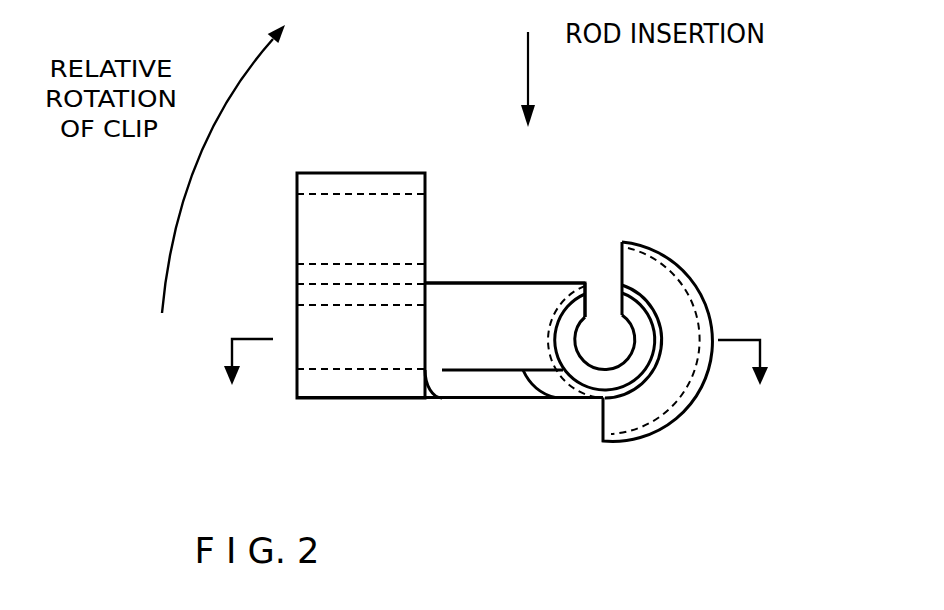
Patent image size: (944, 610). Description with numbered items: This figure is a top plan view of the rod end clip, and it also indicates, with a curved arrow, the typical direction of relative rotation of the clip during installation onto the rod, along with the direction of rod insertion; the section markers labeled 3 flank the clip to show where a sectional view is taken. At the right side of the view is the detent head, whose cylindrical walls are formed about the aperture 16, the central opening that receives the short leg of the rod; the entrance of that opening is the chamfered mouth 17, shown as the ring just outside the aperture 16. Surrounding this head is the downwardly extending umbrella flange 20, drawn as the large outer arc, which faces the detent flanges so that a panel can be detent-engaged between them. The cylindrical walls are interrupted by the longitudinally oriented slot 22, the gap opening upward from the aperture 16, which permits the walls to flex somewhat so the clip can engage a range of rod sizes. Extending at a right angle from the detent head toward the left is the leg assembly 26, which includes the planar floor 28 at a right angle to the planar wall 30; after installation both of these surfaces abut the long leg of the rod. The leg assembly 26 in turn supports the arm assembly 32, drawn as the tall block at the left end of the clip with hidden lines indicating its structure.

The section line 3- 3 is at (499, 362).
The aperture 16 is at (593, 358).
The chamfered mouth 17 is at (637, 360).
The umbrella flange 20 is at (675, 292).
The longitudinally oriented slot 22 is at (602, 272).
The leg assembly 26 is at (517, 268).
The planar floor 28 is at (465, 300).
The planar wall 30 is at (457, 394).
The arm assembly 32 is at (370, 162).